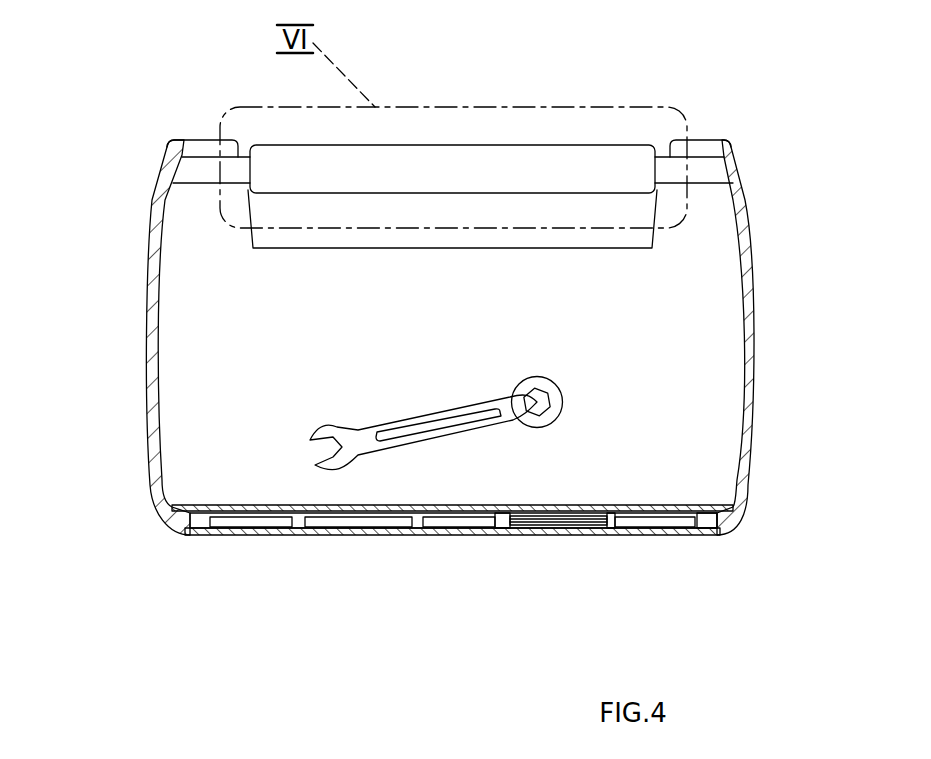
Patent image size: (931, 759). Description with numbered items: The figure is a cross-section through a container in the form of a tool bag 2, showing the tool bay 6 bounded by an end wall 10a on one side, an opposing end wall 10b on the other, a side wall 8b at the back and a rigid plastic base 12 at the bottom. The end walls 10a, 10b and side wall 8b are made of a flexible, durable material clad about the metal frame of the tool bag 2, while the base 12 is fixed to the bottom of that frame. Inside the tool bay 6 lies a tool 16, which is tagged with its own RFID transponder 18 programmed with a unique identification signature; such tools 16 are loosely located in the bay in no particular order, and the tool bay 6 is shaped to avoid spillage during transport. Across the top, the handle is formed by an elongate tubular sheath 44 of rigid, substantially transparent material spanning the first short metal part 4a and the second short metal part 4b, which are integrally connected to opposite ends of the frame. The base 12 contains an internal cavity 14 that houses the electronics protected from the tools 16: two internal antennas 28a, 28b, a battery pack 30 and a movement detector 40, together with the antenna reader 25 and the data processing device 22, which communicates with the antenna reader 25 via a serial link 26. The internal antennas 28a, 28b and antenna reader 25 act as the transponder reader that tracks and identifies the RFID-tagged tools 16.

The tool bag 2 is at (101, 244).
The first short metal part 4a is at (205, 165).
The second short metal part 4b is at (700, 168).
The tool bay 6 is at (696, 299).
The side wall 8b is at (438, 316).
The end wall 10a is at (145, 300).
The end wall 10b is at (762, 343).
The base 12 is at (528, 521).
The internal cavity 14 is at (503, 521).
The tool 16 is at (353, 443).
The RFID transponder 18 is at (435, 427).
The data processing device 22 is at (592, 514).
The antenna reader 25 is at (595, 521).
The serial link 26 is at (557, 521).
The internal antenna 28a is at (230, 520).
The internal antenna 28b is at (678, 521).
The battery pack 30 is at (347, 520).
The movement detector 40 is at (447, 520).
The tubular sheath 44 is at (575, 146).